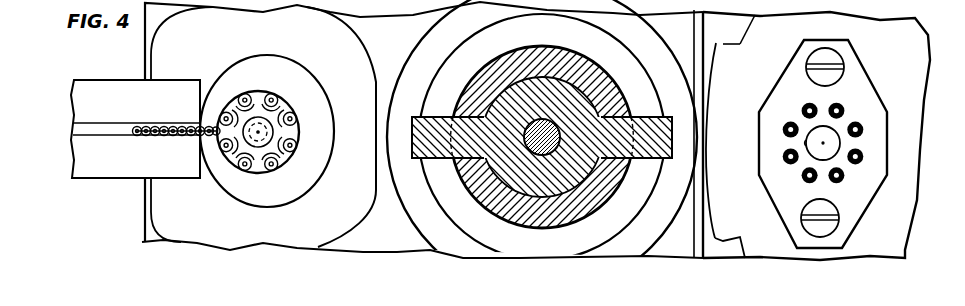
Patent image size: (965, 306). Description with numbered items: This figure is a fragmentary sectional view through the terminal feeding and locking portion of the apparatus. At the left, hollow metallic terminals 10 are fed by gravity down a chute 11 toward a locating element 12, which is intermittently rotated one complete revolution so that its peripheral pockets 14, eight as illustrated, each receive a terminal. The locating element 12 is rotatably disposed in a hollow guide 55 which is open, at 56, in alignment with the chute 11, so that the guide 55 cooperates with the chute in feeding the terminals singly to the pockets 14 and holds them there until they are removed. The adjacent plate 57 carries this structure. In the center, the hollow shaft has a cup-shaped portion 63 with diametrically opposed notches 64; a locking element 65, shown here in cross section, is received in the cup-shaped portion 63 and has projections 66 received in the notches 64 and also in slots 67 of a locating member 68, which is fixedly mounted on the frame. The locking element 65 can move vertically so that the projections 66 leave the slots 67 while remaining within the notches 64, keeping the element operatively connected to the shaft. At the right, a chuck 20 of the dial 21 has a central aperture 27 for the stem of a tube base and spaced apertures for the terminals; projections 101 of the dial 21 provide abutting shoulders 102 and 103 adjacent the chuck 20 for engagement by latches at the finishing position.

The hollow metallic terminals 10 is at (155, 137).
The chute 11 is at (104, 167).
The locating element 12 is at (288, 106).
The pockets 14 is at (260, 91).
The chuck 20 is at (865, 90).
The dial 21 is at (910, 43).
The central aperture 27 is at (840, 143).
The hollow guide 55 is at (289, 68).
The opening 56 is at (180, 138).
The side plate 57 is at (358, 20).
The cup-shaped portion 63 is at (470, 187).
The notches 64 is at (455, 101).
The locking element 65 is at (527, 86).
The projections 66 is at (414, 143).
The slots 67 is at (435, 155).
The locating member 68 is at (638, 197).
The projections 101 is at (723, 62).
The abutting shoulder 102 is at (732, 234).
The abutting shoulder 103 is at (740, 44).